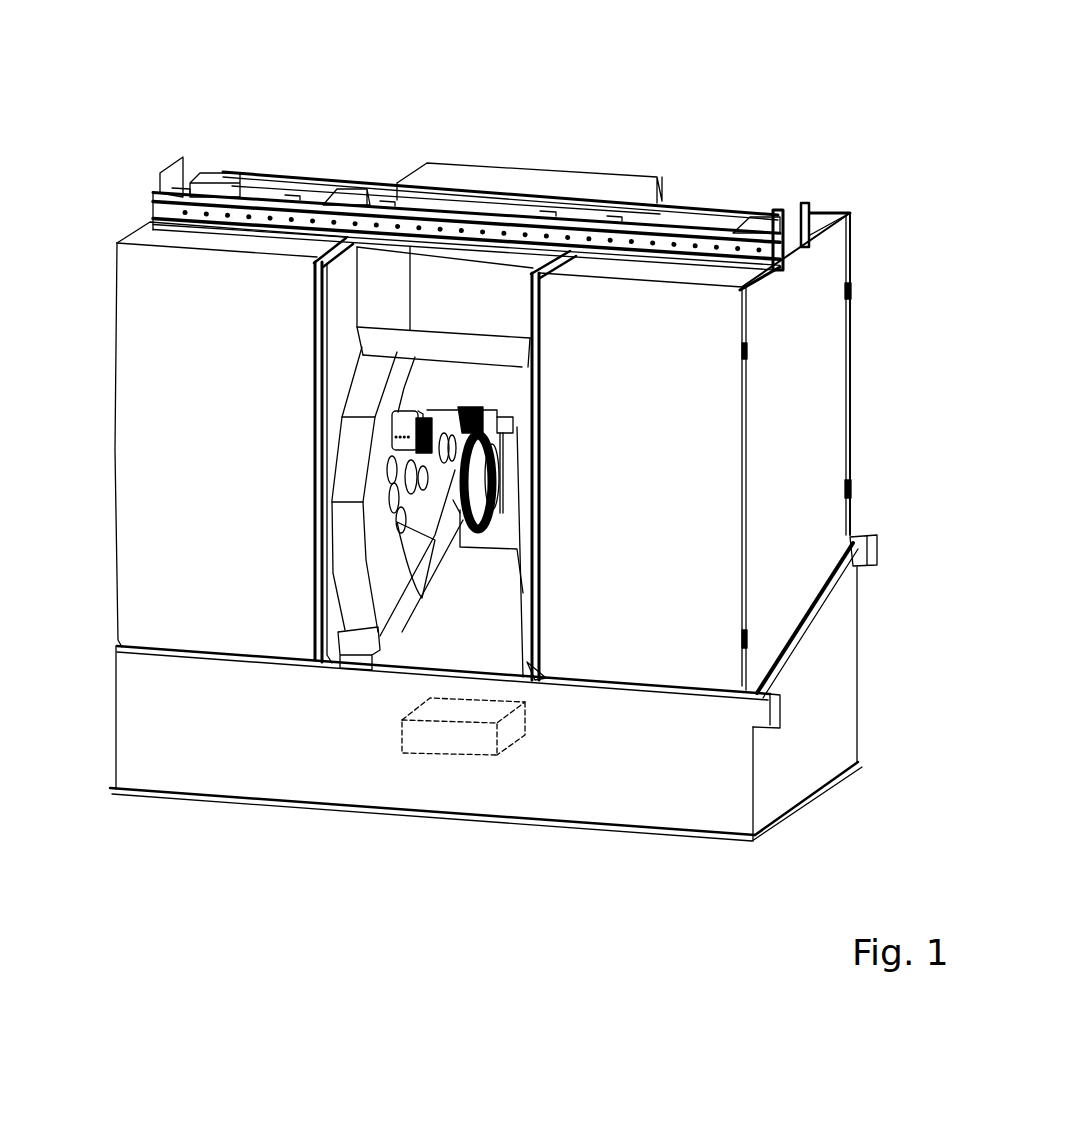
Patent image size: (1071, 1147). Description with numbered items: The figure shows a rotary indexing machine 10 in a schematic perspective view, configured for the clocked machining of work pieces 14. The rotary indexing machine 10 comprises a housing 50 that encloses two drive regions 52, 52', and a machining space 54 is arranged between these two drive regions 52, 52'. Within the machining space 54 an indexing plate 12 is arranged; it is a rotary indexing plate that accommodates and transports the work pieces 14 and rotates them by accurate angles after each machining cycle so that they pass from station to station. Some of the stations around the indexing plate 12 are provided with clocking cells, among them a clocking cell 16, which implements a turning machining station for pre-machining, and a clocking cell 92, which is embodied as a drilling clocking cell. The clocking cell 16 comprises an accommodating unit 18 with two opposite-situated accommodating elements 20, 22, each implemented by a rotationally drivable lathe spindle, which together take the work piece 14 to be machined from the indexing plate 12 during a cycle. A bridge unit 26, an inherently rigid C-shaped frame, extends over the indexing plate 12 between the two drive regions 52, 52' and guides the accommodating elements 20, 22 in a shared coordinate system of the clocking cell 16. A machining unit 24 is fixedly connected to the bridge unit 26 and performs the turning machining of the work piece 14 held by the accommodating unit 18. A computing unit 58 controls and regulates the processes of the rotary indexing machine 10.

The rotary indexing machine 10 is at (790, 128).
The indexing plate 12 is at (493, 488).
The work piece 14 is at (509, 411).
The clocking cell 16 is at (433, 385).
The accommodating unit 18 is at (431, 412).
The accommodating element 20 is at (456, 398).
The accommodating element 22 is at (513, 437).
The machining unit 24 is at (513, 413).
The bridge unit 26 is at (470, 403).
The housing 50 is at (173, 722).
The drive region 52 is at (195, 450).
The drive region 52' is at (735, 474).
The machining space 54 is at (492, 563).
The computing unit 58 is at (445, 757).
The clocking cell 92 is at (395, 430).